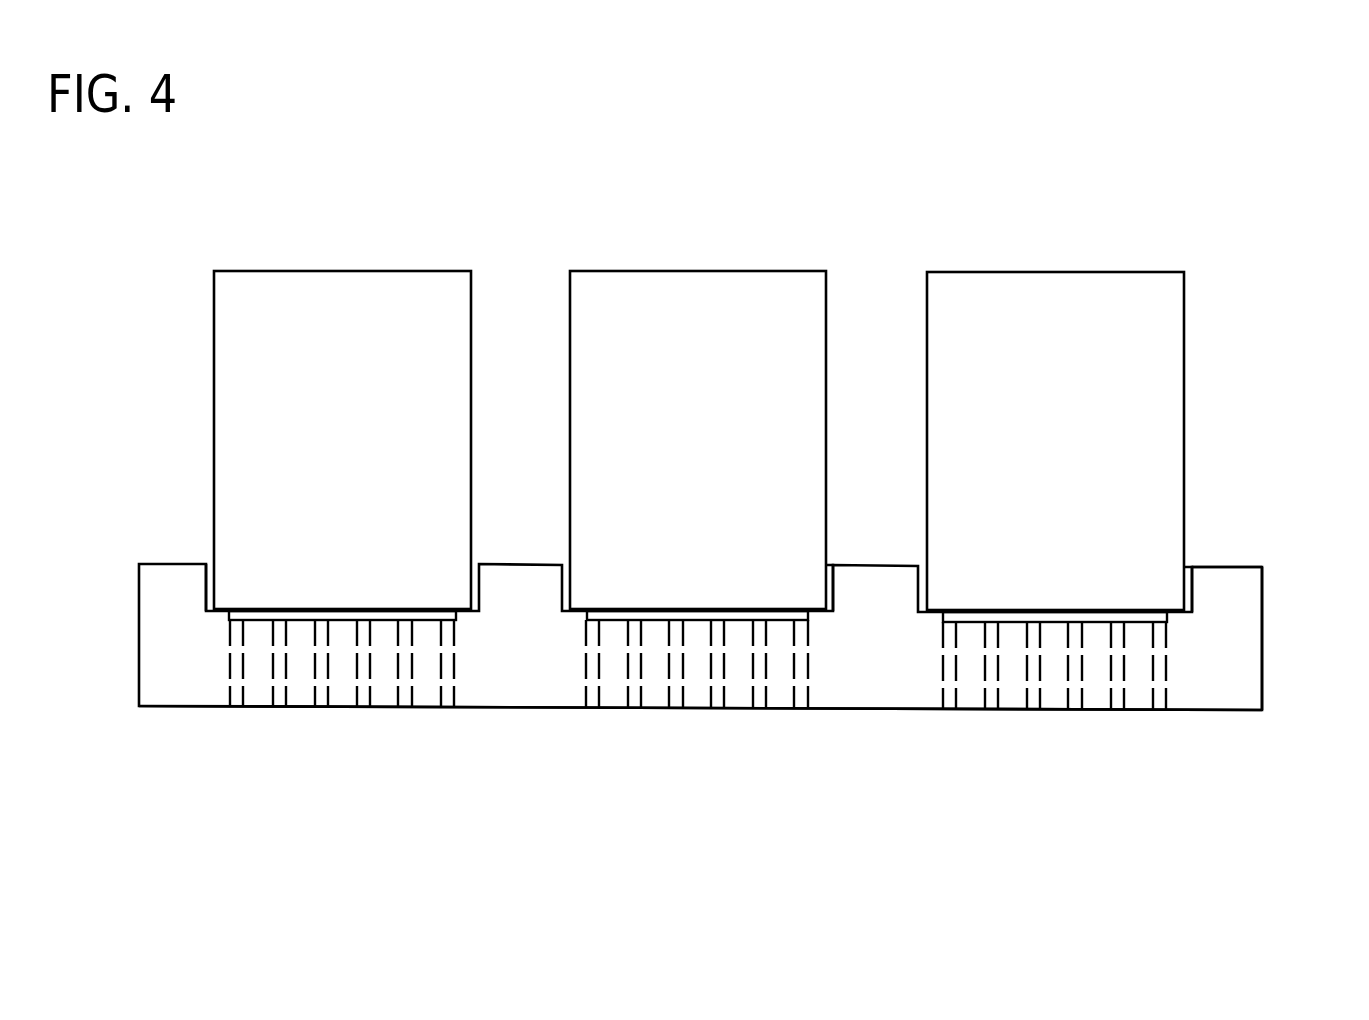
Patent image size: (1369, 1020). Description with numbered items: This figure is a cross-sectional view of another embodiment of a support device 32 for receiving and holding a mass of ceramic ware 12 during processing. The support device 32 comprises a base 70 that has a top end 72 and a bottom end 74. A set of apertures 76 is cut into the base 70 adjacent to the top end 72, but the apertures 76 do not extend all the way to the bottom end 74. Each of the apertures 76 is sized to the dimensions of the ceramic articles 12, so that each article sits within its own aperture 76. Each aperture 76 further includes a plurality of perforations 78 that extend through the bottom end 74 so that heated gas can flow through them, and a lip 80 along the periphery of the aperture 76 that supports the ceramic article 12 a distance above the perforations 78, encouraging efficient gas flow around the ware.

The ceramic ware 12 is at (596, 302).
The support device 32 is at (1236, 437).
The base 70 is at (1240, 617).
The top end 72 is at (1236, 567).
The bottom end 74 is at (1233, 710).
The apertures 76 is at (206, 588).
The perforations 78 is at (365, 707).
The lip 80 is at (457, 618).